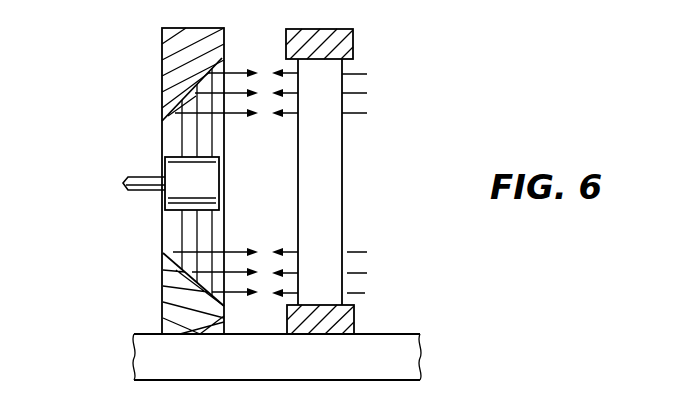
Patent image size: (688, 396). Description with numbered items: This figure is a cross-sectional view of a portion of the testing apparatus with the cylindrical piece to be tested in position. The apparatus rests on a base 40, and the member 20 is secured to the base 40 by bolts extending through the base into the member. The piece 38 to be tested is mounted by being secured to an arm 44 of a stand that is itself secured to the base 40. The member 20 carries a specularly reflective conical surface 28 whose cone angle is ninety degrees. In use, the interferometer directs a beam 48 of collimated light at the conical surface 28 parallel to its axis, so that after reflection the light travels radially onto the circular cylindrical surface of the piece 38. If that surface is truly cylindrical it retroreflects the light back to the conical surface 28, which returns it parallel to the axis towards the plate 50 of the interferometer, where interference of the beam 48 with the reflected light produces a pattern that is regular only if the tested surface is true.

The member 20 is at (154, 44).
The conical surface 28 is at (226, 66).
The piece to be tested 38 is at (211, 188).
The arm 44 is at (142, 178).
The beam of collimated light 48 is at (366, 74).
The plate 50 is at (334, 216).
The base 40 is at (400, 350).